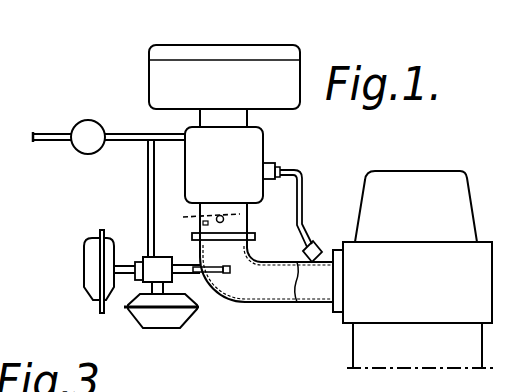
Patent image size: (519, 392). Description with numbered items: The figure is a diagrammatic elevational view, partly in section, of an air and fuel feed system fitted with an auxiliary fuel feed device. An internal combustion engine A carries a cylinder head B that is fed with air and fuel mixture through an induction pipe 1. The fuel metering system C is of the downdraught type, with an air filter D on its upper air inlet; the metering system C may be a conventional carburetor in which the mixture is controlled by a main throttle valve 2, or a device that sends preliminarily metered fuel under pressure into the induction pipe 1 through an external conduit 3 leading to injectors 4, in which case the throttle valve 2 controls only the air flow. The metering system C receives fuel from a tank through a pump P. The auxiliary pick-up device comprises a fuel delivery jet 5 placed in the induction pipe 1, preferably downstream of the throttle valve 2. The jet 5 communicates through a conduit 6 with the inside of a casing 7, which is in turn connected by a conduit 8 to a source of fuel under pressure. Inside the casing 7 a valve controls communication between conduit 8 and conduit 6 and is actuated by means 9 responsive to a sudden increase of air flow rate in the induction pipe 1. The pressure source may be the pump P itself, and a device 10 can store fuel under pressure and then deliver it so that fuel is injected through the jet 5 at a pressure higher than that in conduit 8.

The induction pipe 1 is at (259, 293).
The main throttle valve 2 is at (204, 218).
The external conduit 3 is at (309, 189).
The injectors 4 is at (314, 250).
The fuel delivery orifice or jet 5 is at (230, 270).
The conduit 6 is at (183, 268).
The casing 7 is at (158, 262).
The conduit 8 is at (148, 196).
The means responsive to air flow increase 9 is at (84, 288).
The fuel storing device 10 is at (160, 329).
The internal combustion engine A is at (422, 345).
The cylinder head B is at (417, 247).
The fuel metering system C is at (232, 165).
The air filter D is at (224, 77).
The pump P is at (79, 149).